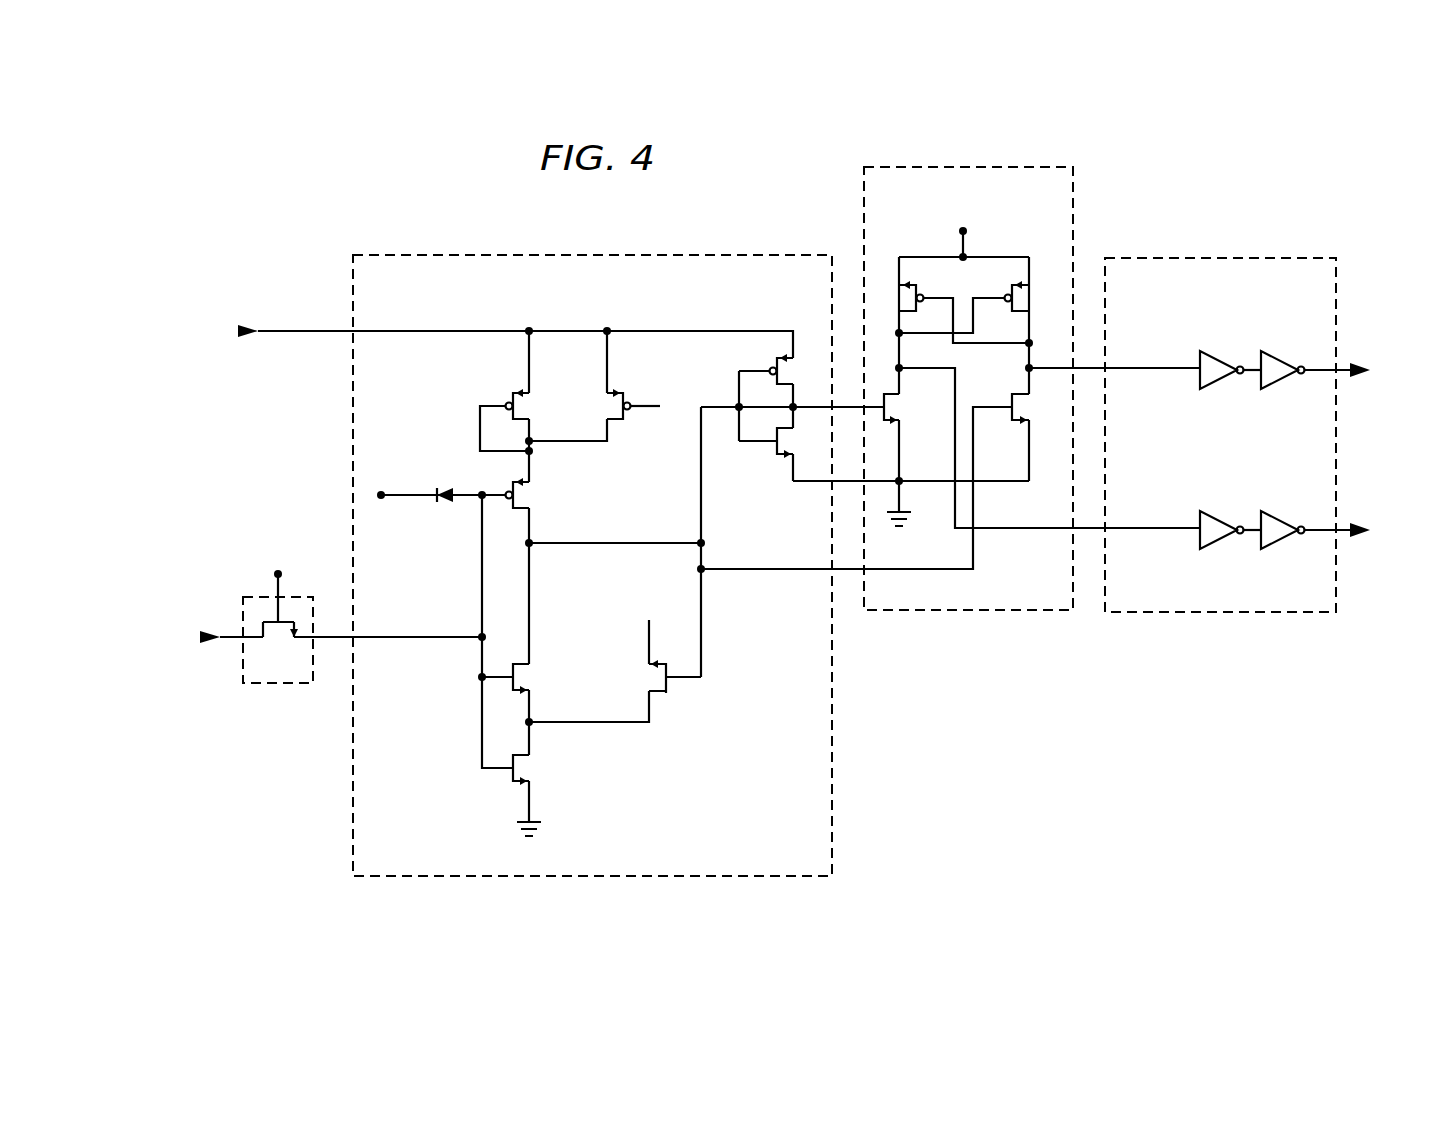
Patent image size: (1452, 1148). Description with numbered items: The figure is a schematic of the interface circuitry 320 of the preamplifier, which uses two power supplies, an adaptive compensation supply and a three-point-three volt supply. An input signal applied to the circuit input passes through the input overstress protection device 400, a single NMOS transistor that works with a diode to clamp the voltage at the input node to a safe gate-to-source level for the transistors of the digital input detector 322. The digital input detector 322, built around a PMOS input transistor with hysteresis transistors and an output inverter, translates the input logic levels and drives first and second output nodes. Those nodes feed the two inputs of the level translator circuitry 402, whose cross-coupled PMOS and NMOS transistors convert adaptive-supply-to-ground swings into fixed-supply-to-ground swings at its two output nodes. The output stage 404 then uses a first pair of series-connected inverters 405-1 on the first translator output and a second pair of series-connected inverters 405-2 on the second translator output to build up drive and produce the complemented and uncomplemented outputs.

The interface circuitry 320 is at (296, 217).
The digital input detector 322 is at (560, 256).
The input overstress protection device 400 is at (273, 684).
The level translator circuitry 402 is at (1020, 167).
The output stage 404 is at (1245, 258).
The first pair of series-connected inverters 405-1 is at (1190, 553).
The second pair of series-connected inverters 405-2 is at (1190, 393).